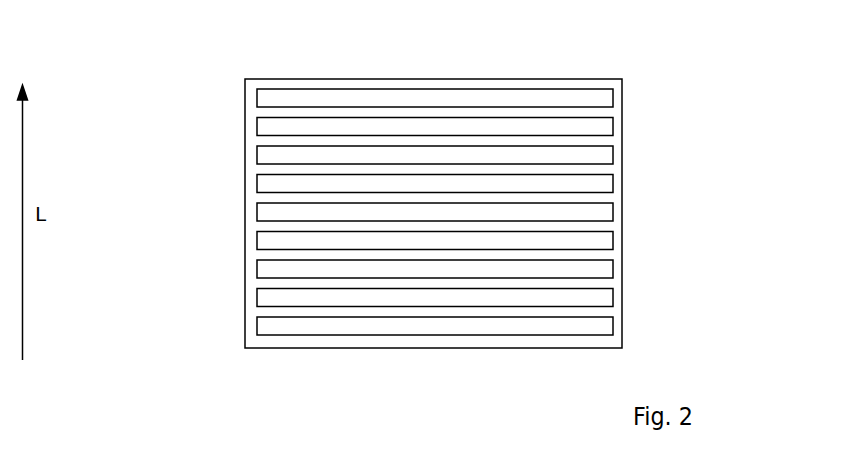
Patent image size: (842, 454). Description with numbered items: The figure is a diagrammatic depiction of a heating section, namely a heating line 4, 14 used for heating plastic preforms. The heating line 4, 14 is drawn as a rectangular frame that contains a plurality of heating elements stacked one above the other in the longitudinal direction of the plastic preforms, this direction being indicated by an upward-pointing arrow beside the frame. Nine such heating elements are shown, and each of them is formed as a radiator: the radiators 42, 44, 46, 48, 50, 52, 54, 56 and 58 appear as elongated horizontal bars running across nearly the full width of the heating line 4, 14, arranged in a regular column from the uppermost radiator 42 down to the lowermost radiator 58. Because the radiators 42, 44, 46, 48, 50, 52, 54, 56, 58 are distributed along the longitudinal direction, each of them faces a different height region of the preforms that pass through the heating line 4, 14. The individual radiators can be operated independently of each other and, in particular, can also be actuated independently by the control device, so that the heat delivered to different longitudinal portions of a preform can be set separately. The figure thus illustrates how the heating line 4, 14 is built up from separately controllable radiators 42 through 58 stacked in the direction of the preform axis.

The heating line 4 is at (513, 205).
The heating line 14 is at (637, 171).
The radiator 42 is at (267, 98).
The radiator 44 is at (267, 128).
The radiator 46 is at (263, 155).
The radiator 48 is at (262, 181).
The radiator 50 is at (266, 210).
The radiator 52 is at (268, 239).
The radiator 54 is at (271, 269).
The radiator 56 is at (267, 297).
The radiator 58 is at (263, 325).